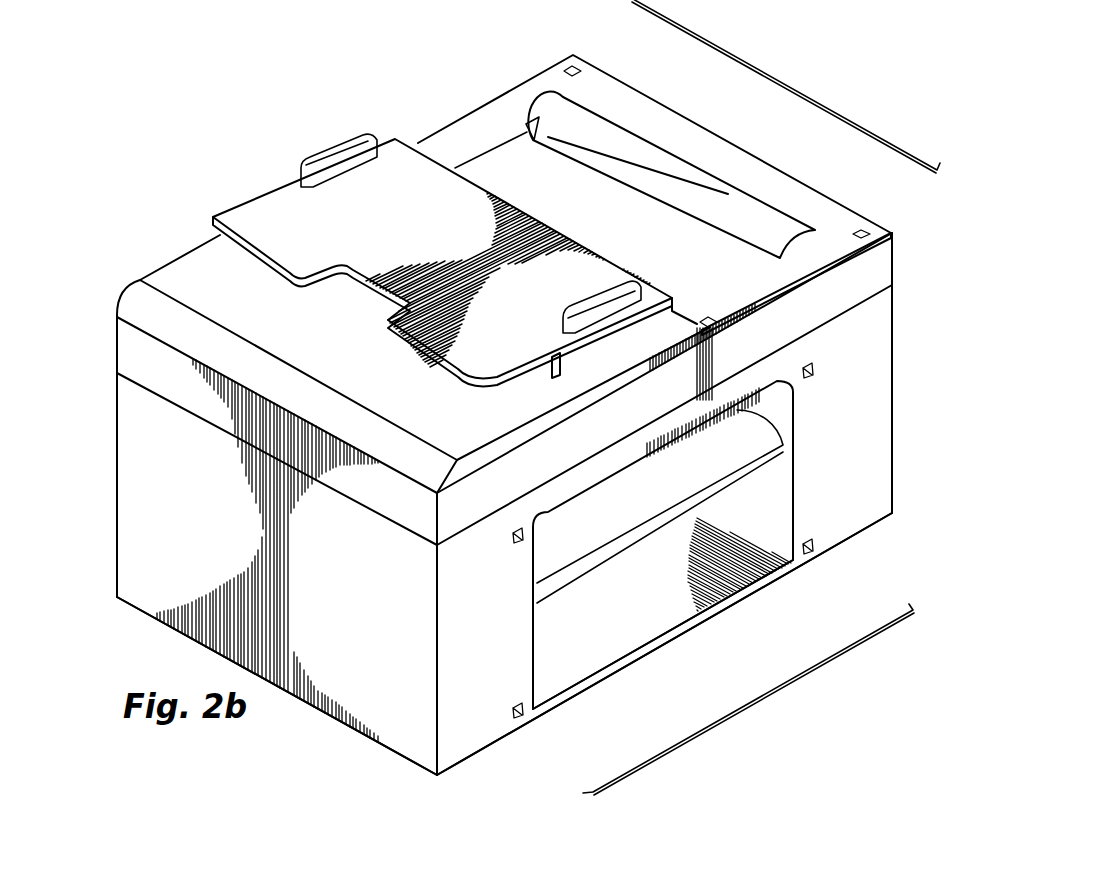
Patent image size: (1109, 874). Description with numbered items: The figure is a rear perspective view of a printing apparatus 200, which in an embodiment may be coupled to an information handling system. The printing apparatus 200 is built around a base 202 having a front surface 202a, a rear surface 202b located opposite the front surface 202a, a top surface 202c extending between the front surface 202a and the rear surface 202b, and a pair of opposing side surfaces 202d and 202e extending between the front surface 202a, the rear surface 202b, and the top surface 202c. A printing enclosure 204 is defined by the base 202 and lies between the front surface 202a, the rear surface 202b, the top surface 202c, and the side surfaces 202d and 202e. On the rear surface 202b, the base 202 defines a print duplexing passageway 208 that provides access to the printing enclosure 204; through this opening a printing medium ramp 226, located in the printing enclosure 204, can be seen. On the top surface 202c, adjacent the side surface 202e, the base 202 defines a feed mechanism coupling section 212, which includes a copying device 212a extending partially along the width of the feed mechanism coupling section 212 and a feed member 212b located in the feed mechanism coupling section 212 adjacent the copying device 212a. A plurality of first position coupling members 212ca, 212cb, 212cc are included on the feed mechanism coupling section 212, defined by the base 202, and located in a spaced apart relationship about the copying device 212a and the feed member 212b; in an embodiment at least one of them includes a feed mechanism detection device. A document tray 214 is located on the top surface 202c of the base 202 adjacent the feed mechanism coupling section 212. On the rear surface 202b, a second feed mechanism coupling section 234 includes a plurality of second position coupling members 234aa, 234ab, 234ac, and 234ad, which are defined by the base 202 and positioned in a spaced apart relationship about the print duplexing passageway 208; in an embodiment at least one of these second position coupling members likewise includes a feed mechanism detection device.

The printing apparatus 200 is at (336, 75).
The base 202 is at (166, 252).
The front surface 202a is at (117, 461).
The rear surface 202b is at (458, 753).
The top surface 202c is at (350, 339).
The side surface 202d is at (390, 742).
The side surface 202e is at (895, 493).
The printing enclosure 204 is at (640, 640).
The print duplexing passageway 208 is at (535, 660).
The feed mechanism coupling section 212 is at (679, 167).
The copying device 212a is at (528, 130).
The feed member 212b is at (767, 215).
The first position coupling member 212ca is at (566, 69).
The first position coupling member 212cb is at (866, 232).
The first position coupling member 212cc is at (702, 318).
The document tray 214 is at (262, 204).
The printing medium ramp 226 is at (745, 477).
The feed mechanism coupling section 234 is at (515, 540).
The second position coupling member 234aa is at (518, 545).
The second position coupling member 234ab is at (815, 373).
The second position coupling member 234ac is at (815, 550).
The second position coupling member 234ad is at (521, 716).